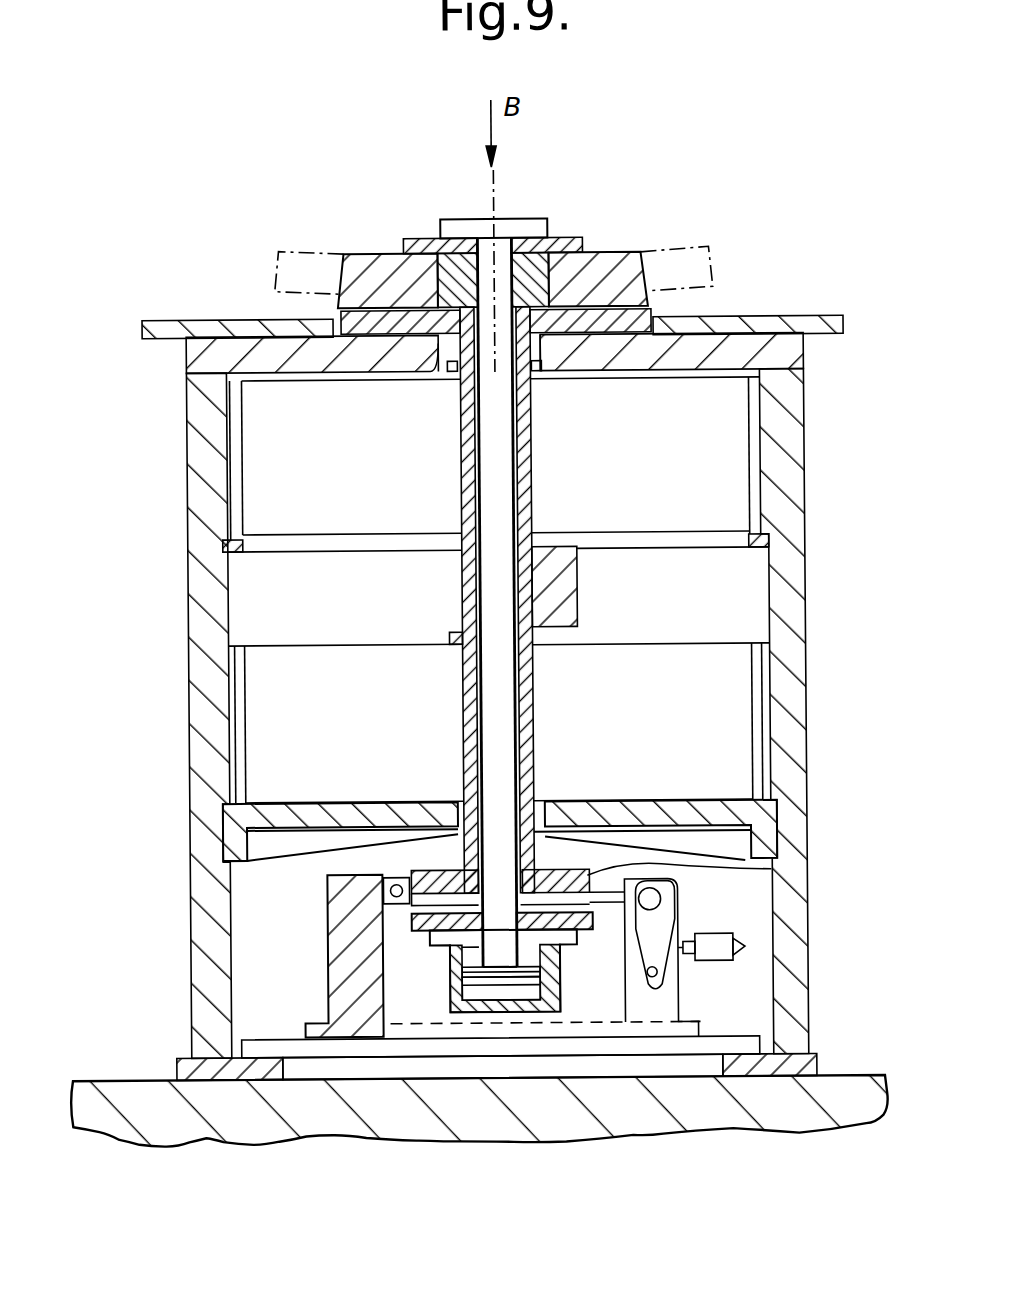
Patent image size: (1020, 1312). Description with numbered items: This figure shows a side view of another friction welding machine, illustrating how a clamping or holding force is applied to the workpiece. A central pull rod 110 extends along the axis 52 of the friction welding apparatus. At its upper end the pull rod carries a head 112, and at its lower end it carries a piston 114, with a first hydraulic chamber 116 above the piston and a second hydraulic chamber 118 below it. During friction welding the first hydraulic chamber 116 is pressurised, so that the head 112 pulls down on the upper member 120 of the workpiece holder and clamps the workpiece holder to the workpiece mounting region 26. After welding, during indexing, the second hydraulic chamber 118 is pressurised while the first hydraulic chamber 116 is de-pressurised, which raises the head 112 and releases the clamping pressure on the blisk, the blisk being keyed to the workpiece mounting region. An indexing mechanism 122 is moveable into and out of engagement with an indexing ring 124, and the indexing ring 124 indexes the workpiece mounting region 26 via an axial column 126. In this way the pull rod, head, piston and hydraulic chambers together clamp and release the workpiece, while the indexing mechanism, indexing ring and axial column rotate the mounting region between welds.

The workpiece mounting region 26 is at (654, 312).
The axis 52 is at (499, 205).
The central pull rod 110 is at (502, 488).
The head 112 is at (534, 224).
The piston 114 is at (528, 985).
The first hydraulic chamber 116 is at (475, 947).
The second hydraulic chamber 118 is at (468, 987).
The upper member 120 is at (406, 240).
The indexing mechanism 122 is at (731, 980).
The indexing ring 124 is at (586, 876).
The axial column 126 is at (530, 721).